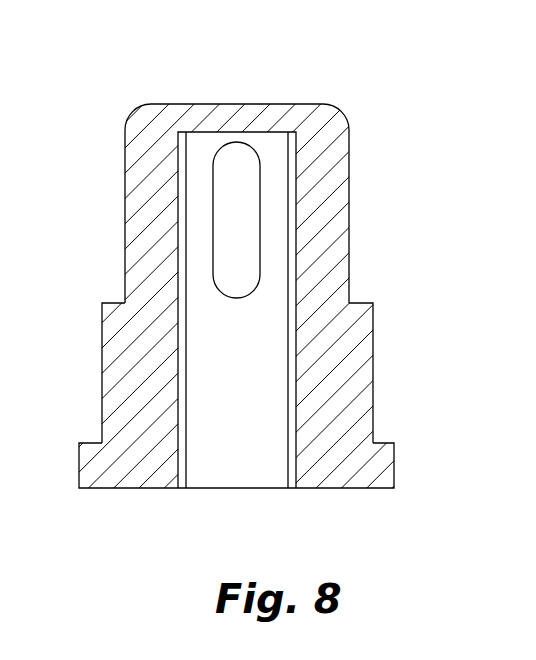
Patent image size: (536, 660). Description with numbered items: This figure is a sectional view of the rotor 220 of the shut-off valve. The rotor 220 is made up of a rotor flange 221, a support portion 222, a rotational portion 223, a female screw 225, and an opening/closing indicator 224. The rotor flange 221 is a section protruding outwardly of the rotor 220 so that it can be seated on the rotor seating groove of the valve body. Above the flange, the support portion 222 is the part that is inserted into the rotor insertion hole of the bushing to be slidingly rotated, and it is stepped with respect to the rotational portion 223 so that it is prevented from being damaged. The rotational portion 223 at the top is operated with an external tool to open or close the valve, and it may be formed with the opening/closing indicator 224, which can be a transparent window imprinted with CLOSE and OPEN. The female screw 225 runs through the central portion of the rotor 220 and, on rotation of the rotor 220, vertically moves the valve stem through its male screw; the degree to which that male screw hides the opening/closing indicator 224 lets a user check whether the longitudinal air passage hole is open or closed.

The rotor 220 is at (156, 93).
The rotor flange 221 is at (382, 469).
The support portion 222 is at (360, 378).
The rotational portion 223 is at (320, 217).
The opening/closing indicator 224 is at (235, 217).
The female screw 225 is at (237, 453).